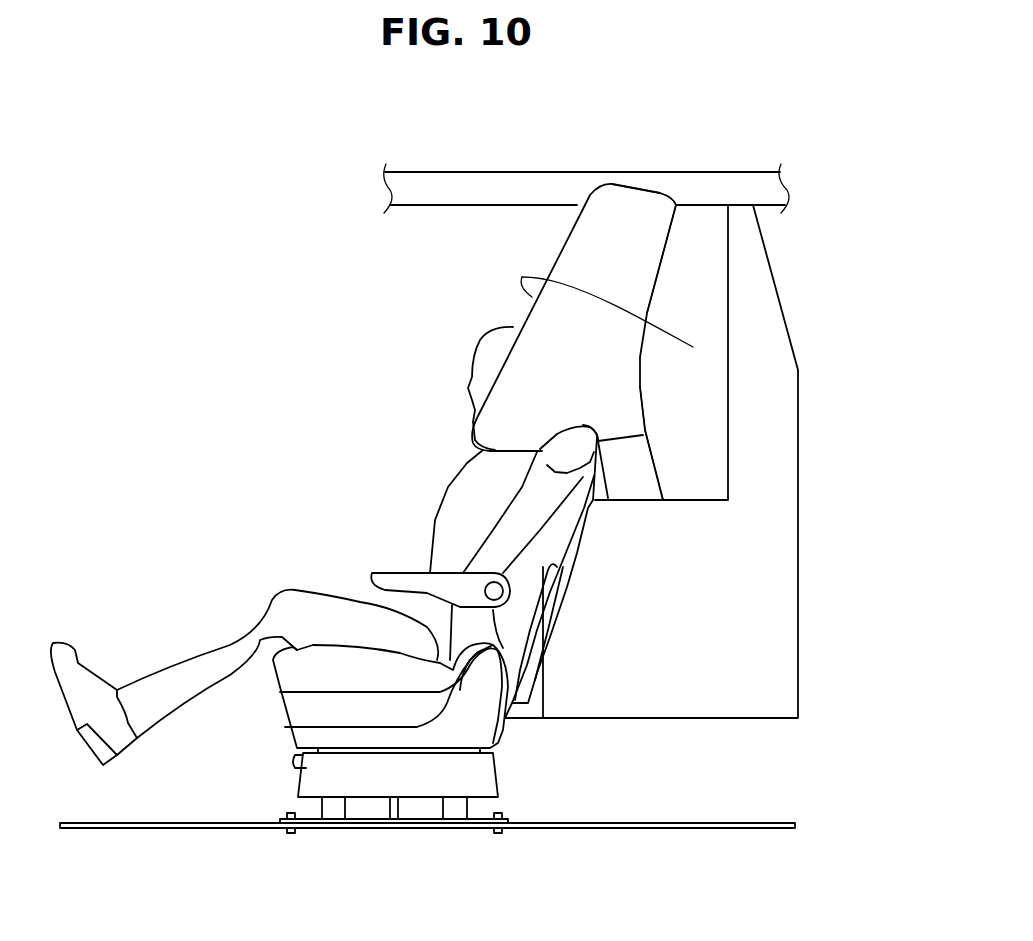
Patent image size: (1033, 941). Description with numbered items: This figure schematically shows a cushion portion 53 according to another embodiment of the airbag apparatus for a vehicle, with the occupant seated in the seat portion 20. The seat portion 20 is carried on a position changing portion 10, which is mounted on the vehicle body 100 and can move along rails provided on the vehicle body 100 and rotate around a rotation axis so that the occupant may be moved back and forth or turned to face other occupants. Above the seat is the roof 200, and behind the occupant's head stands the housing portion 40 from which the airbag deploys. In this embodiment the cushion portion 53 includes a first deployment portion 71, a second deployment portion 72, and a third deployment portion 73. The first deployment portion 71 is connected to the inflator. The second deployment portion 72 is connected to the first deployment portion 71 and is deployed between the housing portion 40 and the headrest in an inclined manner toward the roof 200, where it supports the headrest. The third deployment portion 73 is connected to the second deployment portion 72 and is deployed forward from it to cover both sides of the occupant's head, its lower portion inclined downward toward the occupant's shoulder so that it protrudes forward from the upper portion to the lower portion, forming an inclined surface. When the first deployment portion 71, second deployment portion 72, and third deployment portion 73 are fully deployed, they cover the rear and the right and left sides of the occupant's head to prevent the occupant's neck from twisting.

The roof 200 is at (493, 188).
The cushion portion 53 is at (697, 342).
The second deployment portion 72 is at (665, 268).
The third deployment portion 73 is at (693, 347).
The first deployment portion 71 is at (642, 472).
The housing portion 40 is at (803, 533).
The seat portion 20 is at (273, 709).
The position changing portion 10 is at (488, 778).
The vehicle body 100 is at (758, 828).